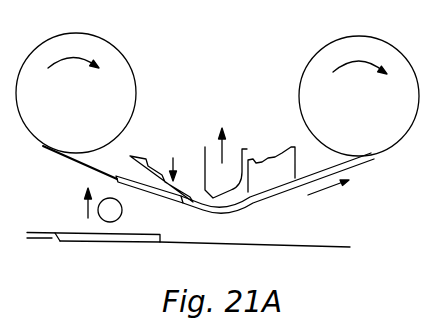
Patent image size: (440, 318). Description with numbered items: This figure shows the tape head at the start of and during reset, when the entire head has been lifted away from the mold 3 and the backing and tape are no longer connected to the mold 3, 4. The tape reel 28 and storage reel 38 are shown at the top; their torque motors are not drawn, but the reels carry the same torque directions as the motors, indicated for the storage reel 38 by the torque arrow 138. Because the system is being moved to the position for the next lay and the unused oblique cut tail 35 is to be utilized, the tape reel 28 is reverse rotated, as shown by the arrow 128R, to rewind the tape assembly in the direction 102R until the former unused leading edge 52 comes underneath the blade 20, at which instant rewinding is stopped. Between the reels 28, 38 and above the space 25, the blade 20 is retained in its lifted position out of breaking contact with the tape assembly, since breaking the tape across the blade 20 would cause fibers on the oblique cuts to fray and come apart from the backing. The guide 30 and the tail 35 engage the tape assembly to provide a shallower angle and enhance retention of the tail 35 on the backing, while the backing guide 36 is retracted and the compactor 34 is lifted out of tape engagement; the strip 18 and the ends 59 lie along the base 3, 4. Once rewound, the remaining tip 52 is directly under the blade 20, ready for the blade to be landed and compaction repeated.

The torque arrow 138 is at (82, 52).
The space between rollers 25 is at (230, 68).
The reverse rotation arrow 128R is at (362, 58).
The storage reel 38 is at (83, 129).
The tape reel 28 is at (372, 133).
The backing guide 36 is at (150, 157).
The blade 20 is at (243, 149).
The guide 30 is at (263, 160).
The unused leading edge 52 is at (117, 179).
The compactor 34 is at (100, 219).
The oblique cut tail 35 is at (160, 198).
The strip end 59 is at (161, 235).
The sheet 18 is at (117, 242).
The mold 3 is at (255, 257).
The base layer 4 is at (253, 246).
The tape direction arrow 102R is at (322, 189).